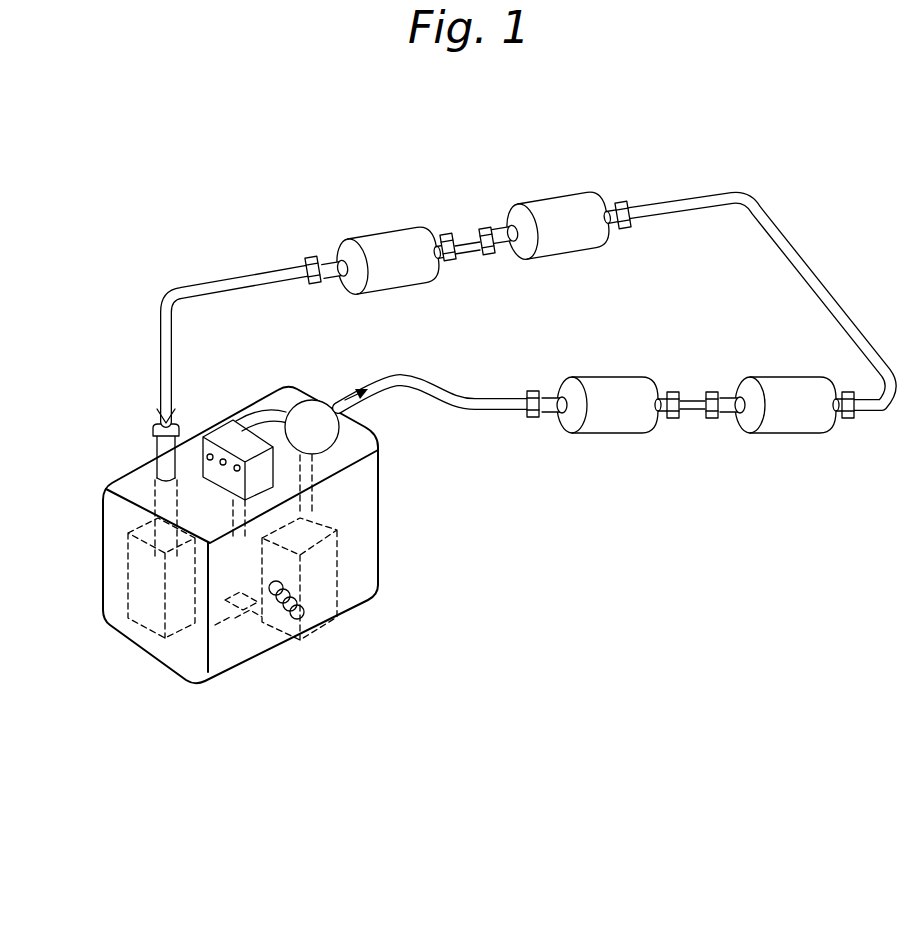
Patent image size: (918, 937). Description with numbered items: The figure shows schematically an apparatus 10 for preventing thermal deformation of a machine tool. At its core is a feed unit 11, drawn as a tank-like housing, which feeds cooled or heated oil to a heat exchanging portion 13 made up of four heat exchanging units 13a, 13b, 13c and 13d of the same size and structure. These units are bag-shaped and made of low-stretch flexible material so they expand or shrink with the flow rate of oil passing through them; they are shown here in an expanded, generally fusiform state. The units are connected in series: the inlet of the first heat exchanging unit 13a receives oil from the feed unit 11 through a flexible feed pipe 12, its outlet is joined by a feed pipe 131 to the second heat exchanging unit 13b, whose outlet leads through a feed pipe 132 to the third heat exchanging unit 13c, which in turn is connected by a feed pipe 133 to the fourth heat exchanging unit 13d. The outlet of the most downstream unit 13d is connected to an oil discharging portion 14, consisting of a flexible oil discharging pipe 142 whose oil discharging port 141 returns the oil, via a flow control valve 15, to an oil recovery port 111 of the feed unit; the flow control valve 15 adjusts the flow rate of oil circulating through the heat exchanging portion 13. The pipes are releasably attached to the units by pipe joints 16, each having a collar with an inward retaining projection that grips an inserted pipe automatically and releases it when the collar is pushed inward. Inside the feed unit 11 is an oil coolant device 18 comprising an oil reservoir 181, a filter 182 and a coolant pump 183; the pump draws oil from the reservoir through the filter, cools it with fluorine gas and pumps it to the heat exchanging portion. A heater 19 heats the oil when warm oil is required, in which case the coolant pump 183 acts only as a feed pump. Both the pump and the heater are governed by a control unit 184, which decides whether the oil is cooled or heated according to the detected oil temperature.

The apparatus for preventing thermal deformation of a machine tool 10 is at (618, 110).
The feed unit 11 is at (530, 843).
The oil recovery port 111 is at (135, 472).
The feed pipe 12 is at (471, 424).
The heat exchanging portion 13 is at (693, 466).
The first heat exchanging unit 13a is at (575, 417).
The second heat exchanging unit 13b is at (783, 431).
The third heat exchanging unit 13c is at (563, 195).
The fourth heat exchanging unit 13d is at (388, 230).
The feed pipe 131 is at (693, 413).
The feed pipe 132 is at (750, 192).
The feed pipe 133 is at (468, 235).
The oil discharging portion 14 is at (193, 315).
The oil discharging port 141 is at (156, 416).
The oil discharging pipe 142 is at (161, 299).
The flow control valve 15 is at (153, 430).
The pipe joint 16 is at (318, 257).
The oil coolant device 18 is at (418, 777).
The oil reservoir 181 is at (230, 665).
The filter 182 is at (238, 640).
The coolant pump 183 is at (330, 440).
The control unit 184 is at (232, 610).
The heater 19 is at (304, 611).